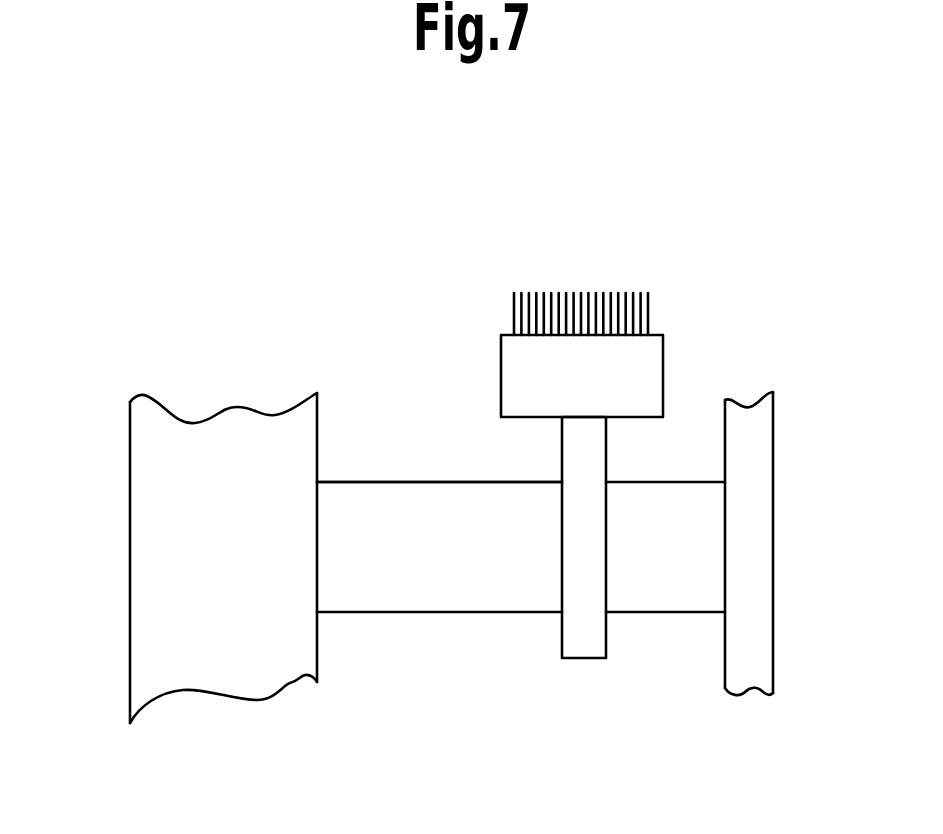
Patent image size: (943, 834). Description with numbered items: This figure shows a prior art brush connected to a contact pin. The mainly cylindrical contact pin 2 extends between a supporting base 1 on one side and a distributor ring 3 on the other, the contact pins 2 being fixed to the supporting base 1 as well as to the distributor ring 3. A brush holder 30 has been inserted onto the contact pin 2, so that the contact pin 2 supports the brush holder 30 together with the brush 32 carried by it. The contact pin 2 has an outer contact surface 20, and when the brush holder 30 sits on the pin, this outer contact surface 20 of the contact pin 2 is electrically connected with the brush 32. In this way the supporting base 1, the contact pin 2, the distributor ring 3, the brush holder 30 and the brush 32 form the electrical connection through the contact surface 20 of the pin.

The supporting base 1 is at (130, 623).
The contact pin 2 is at (380, 612).
The distributor ring 3 is at (773, 600).
The outer contact surface 20 is at (349, 482).
The brush holder 30 is at (606, 627).
The brush 32 is at (648, 313).